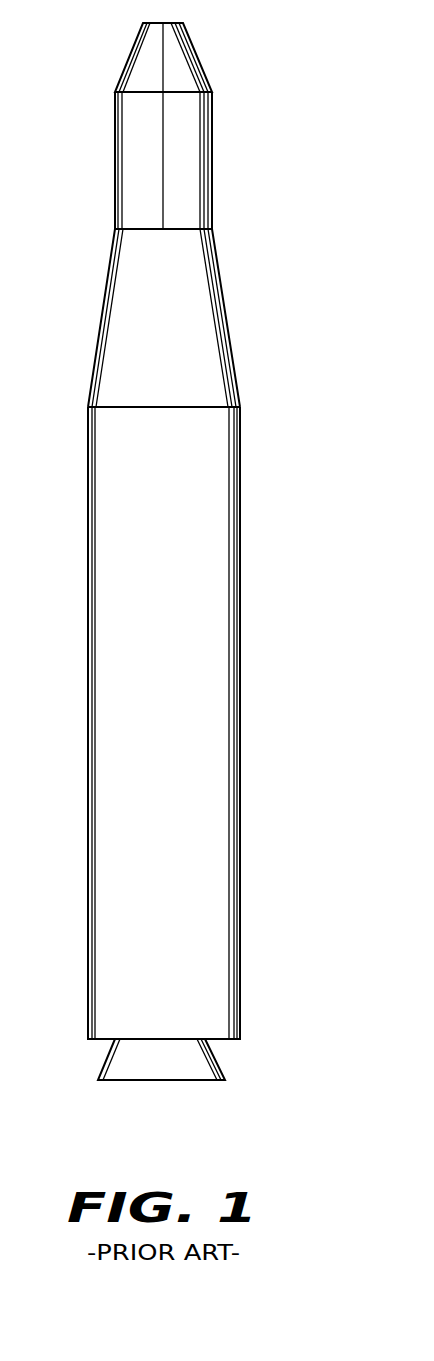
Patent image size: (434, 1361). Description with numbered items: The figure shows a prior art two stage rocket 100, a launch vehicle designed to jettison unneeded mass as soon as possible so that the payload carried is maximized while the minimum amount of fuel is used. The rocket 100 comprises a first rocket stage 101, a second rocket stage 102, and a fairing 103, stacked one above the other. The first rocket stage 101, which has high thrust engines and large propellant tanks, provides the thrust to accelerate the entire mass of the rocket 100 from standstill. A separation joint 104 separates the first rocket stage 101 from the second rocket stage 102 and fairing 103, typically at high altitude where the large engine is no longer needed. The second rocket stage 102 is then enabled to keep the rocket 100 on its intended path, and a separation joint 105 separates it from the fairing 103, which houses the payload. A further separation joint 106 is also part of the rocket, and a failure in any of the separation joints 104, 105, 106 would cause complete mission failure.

The two stage rocket 100 is at (163, 589).
The first rocket stage 101 is at (115, 696).
The second rocket stage 102 is at (120, 317).
The fairing 103 is at (185, 64).
The separation joint 104 is at (200, 410).
The separation joint 105 is at (187, 232).
The separation joint 106 is at (163, 158).